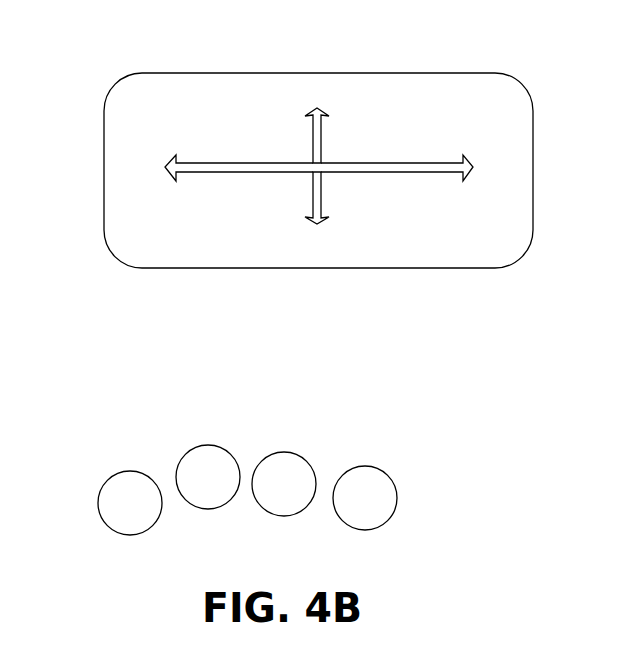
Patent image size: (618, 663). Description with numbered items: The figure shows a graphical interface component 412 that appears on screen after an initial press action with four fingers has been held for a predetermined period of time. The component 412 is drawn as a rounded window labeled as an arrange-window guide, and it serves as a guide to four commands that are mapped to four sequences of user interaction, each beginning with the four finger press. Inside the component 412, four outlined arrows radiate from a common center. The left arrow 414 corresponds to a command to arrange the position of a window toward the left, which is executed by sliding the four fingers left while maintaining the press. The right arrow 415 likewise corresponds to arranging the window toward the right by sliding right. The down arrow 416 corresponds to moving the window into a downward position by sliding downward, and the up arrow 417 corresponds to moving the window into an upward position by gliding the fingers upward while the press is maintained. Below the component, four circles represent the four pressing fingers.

The graphical interface component 412 is at (217, 73).
The left arrow 414 is at (165, 167).
The right arrow 415 is at (473, 167).
The down arrow 416 is at (317, 224).
The up arrow 417 is at (317, 108).